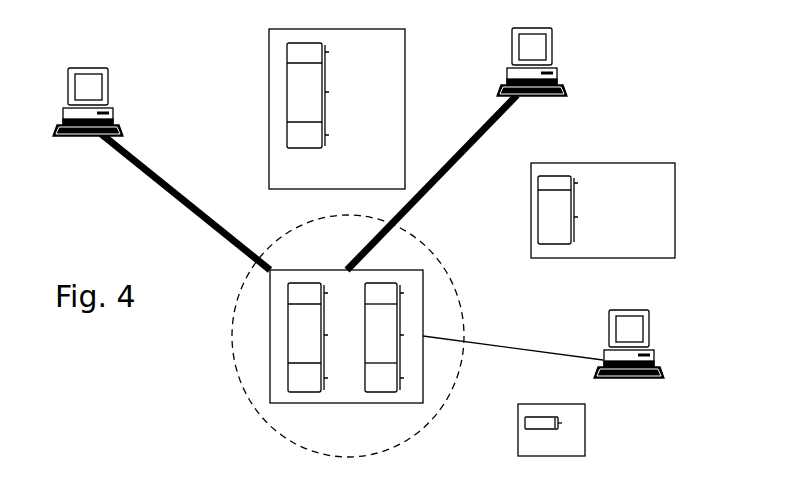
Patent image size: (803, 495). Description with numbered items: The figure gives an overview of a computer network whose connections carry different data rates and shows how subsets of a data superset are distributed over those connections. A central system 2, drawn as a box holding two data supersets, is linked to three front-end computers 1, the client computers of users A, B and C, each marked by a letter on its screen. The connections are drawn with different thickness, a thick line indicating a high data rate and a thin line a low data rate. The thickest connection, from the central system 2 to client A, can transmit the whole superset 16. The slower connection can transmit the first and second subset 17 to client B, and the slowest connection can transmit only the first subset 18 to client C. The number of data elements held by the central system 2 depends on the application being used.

The front-end computer 1 is at (361, 203).
The central system 2 is at (334, 336).
The superset 16 is at (298, 114).
The first and second subset 17 is at (571, 206).
The first subset 18 is at (470, 343).